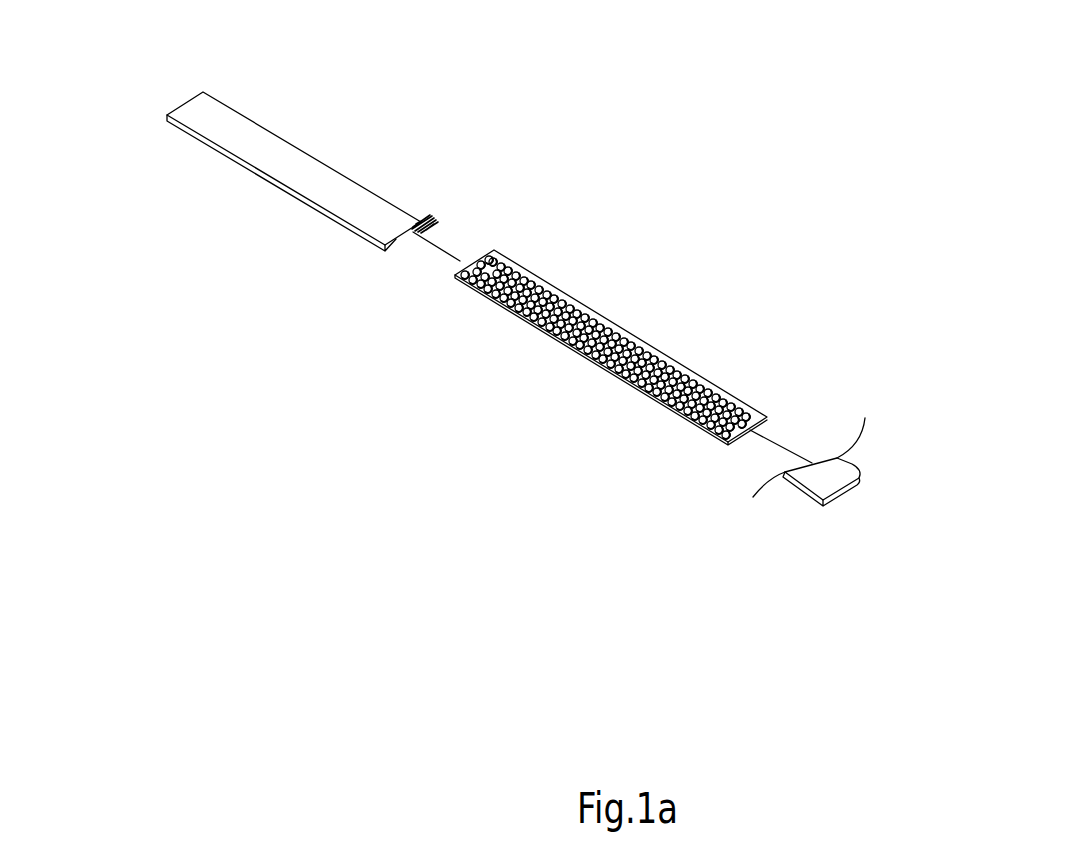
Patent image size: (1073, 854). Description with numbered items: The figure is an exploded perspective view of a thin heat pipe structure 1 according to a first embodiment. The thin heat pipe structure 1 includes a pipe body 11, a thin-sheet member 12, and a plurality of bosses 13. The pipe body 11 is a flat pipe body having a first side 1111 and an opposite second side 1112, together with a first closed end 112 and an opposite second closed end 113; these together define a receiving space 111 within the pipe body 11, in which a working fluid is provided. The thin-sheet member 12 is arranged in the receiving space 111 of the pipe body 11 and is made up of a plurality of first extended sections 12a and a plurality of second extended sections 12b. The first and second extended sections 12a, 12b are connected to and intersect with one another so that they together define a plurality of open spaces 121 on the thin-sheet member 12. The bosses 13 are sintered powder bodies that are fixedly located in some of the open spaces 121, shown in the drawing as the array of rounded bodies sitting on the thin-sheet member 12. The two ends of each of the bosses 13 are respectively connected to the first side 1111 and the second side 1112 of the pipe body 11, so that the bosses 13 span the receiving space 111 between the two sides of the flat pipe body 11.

The thin heat pipe structure 1 is at (922, 187).
The pipe body 11 is at (305, 162).
The receiving space 111 is at (430, 220).
The first side 1111 is at (432, 218).
The second side 1112 is at (423, 226).
The first closed end 112 is at (183, 104).
The second closed end 113 is at (837, 475).
The thin-sheet member 12 is at (500, 382).
The first extended sections 12a is at (455, 282).
The second extended sections 12b is at (452, 277).
The bosses 13 is at (487, 259).
The open spaces 121 is at (493, 264).